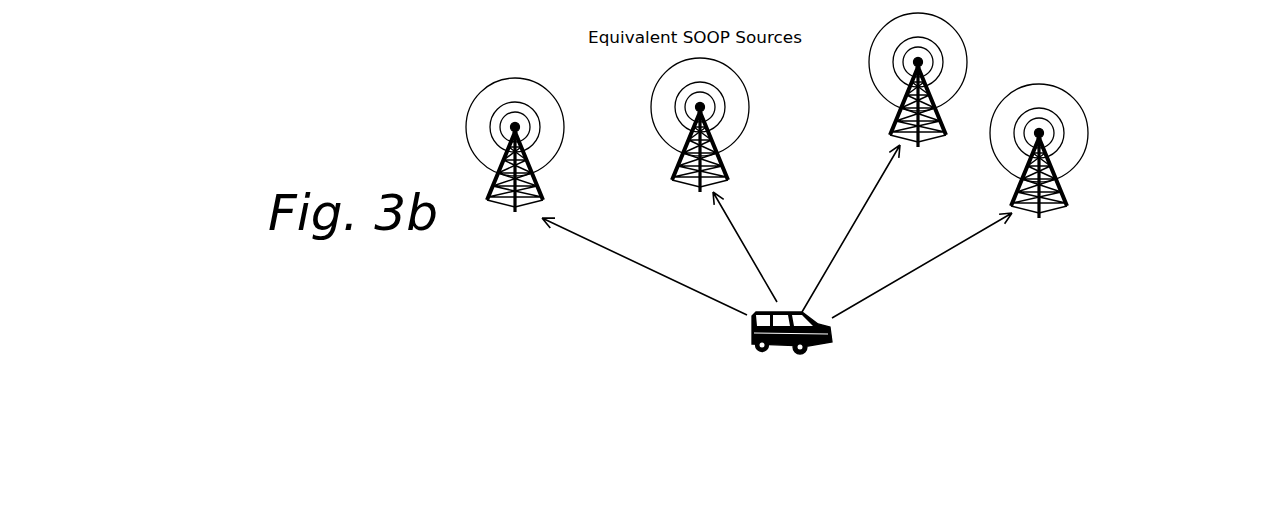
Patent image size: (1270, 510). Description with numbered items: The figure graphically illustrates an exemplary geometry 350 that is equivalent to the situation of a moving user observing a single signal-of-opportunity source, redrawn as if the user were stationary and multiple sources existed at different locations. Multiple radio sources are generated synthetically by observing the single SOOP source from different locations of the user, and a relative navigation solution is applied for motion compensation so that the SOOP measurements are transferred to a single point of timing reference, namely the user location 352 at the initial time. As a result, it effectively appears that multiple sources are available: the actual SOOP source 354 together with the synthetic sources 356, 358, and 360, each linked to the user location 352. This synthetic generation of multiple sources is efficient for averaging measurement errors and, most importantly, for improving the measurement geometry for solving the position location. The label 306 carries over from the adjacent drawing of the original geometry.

The reference from adjacent figure 306 is at (501, 20).
The positioning scenario with equivalent SOOP sources 350 is at (442, 98).
The user location 352 is at (747, 325).
The actual SOOP source 354 is at (1058, 85).
The synthetic source 356 is at (873, 85).
The synthetic source 358 is at (747, 132).
The synthetic source 360 is at (565, 130).